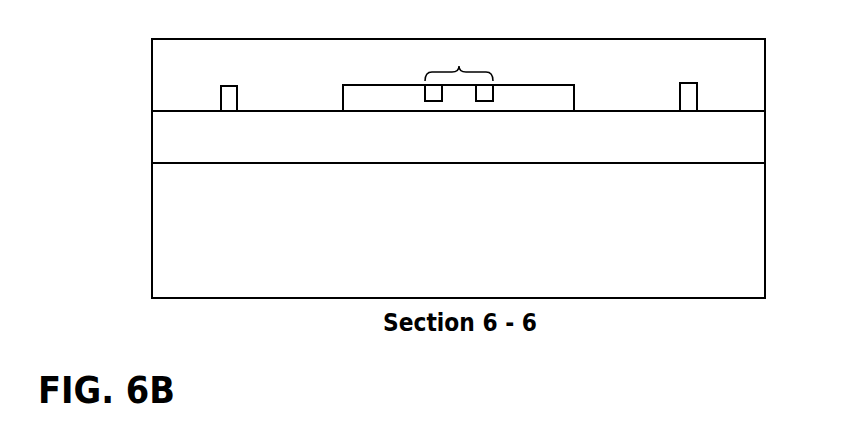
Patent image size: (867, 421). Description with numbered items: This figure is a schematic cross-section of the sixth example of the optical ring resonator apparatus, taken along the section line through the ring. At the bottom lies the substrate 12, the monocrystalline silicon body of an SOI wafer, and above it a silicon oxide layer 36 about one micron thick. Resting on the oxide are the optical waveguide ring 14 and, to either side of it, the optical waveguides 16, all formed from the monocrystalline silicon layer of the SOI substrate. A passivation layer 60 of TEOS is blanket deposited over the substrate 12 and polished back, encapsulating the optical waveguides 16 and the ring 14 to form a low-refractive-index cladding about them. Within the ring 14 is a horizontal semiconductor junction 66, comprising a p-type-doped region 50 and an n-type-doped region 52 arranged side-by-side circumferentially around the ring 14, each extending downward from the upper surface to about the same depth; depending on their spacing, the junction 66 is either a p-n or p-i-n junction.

The passivation layer 60 is at (152, 70).
The silicon oxide layer 36 is at (211, 146).
The substrate 12 is at (212, 267).
The optical waveguides 16 is at (221, 101).
The optical waveguide ring 14 is at (576, 90).
The p-type-doped region 50 is at (434, 102).
The n-type-doped region 52 is at (484, 102).
The horizontal semiconductor junction 66 is at (459, 62).